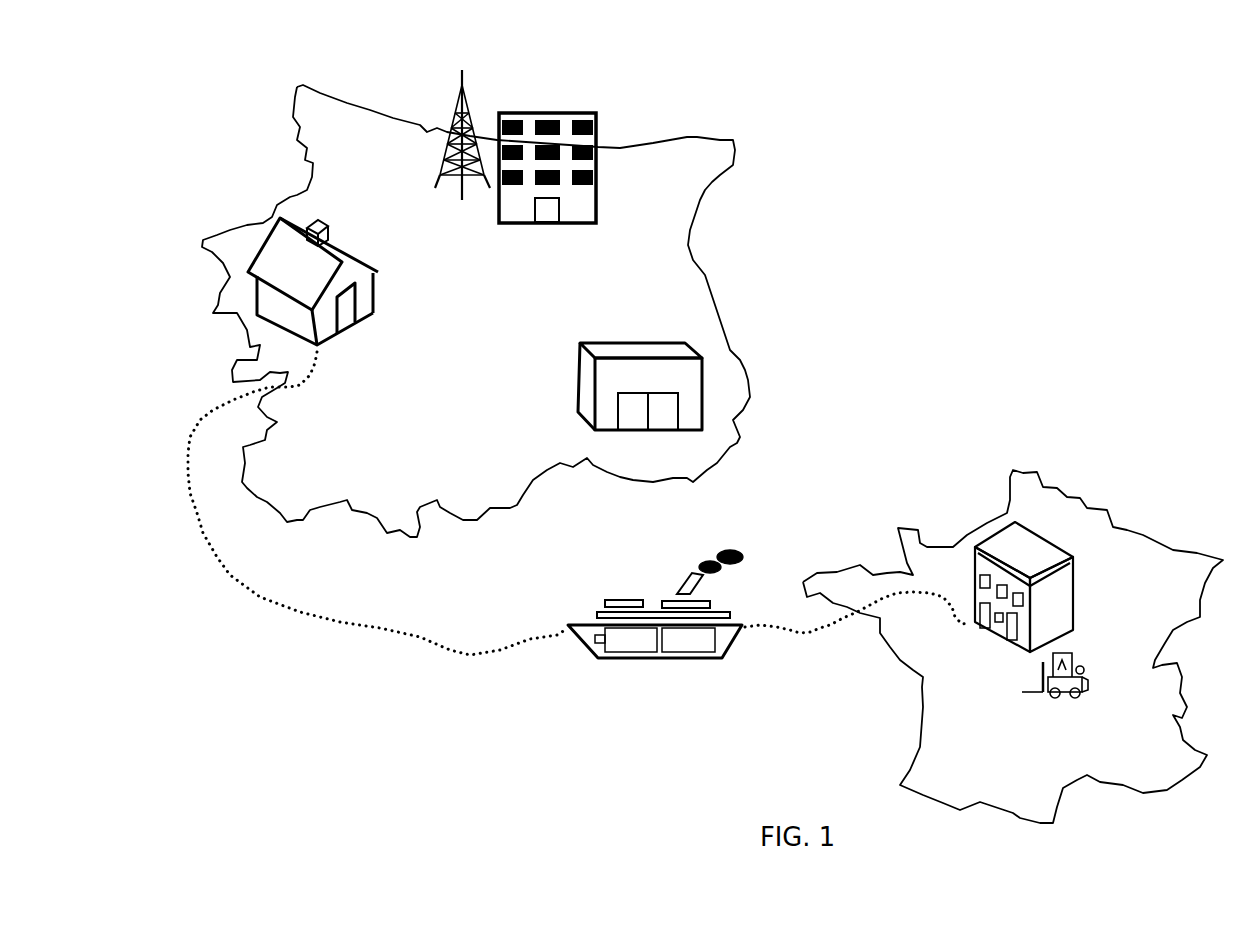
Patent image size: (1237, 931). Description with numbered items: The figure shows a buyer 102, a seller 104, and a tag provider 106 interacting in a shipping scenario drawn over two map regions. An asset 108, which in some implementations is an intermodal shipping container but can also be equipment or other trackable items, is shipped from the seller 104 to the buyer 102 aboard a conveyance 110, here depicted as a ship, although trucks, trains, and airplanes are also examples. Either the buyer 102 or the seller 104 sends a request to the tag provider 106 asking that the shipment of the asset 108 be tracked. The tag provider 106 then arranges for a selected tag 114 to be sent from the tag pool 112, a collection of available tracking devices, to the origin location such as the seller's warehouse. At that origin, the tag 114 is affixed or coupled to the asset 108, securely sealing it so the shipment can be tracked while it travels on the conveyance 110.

The buyer 102 is at (357, 255).
The seller 104 is at (1022, 527).
The tag provider 106 is at (587, 120).
The asset 108 is at (630, 653).
The conveyance 110 is at (740, 643).
The tag pool 112 is at (620, 345).
The tag 114 is at (590, 641).